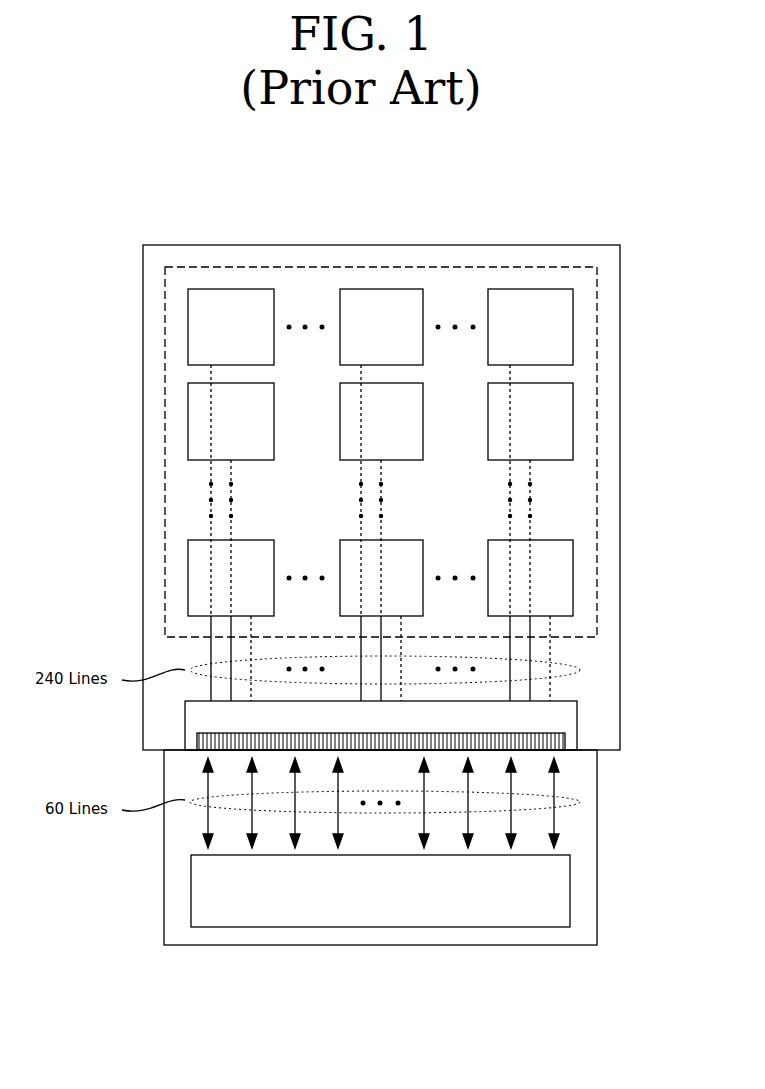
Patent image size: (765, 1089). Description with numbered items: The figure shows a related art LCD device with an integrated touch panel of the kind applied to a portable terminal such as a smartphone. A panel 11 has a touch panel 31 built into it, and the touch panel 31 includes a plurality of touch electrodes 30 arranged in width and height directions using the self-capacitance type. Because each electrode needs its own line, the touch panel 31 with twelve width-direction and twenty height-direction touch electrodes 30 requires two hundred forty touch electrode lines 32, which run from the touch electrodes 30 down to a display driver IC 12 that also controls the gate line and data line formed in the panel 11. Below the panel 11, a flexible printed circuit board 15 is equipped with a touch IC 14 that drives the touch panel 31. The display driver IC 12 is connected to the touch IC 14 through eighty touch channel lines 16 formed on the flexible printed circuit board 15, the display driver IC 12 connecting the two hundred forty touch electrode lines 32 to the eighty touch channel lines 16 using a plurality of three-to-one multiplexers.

The panel 11 is at (620, 495).
The display driver IC 12 is at (577, 728).
The touch IC 14 is at (570, 900).
The flexible printed circuit board 15 is at (597, 830).
The touch channel lines 16 is at (560, 792).
The touch electrodes 30 is at (543, 289).
The touch panel 31 is at (597, 343).
The touch electrode lines 32 is at (210, 372).